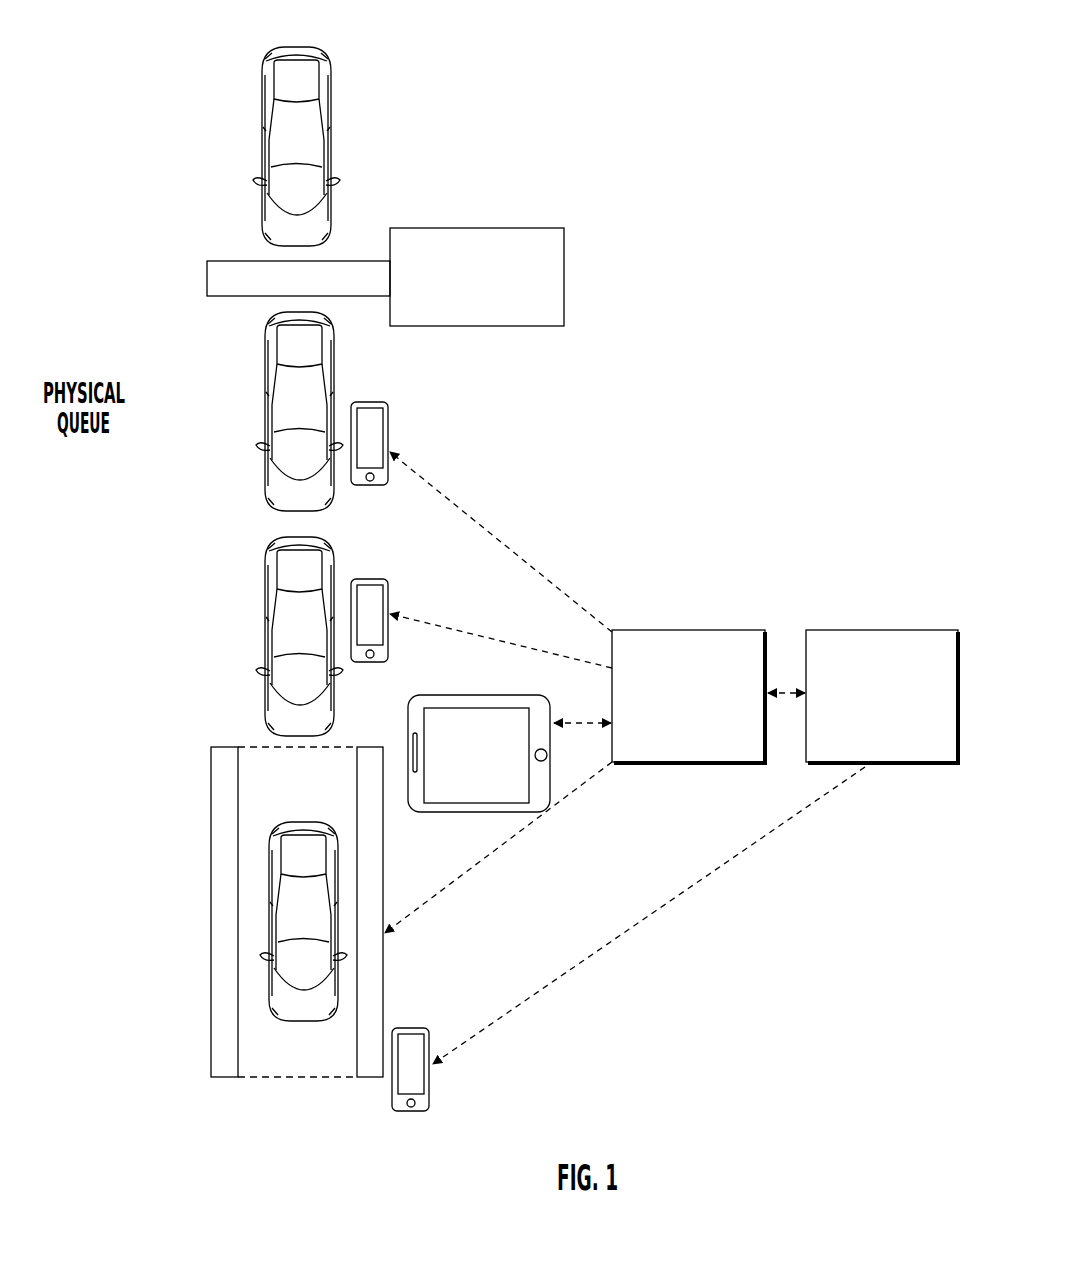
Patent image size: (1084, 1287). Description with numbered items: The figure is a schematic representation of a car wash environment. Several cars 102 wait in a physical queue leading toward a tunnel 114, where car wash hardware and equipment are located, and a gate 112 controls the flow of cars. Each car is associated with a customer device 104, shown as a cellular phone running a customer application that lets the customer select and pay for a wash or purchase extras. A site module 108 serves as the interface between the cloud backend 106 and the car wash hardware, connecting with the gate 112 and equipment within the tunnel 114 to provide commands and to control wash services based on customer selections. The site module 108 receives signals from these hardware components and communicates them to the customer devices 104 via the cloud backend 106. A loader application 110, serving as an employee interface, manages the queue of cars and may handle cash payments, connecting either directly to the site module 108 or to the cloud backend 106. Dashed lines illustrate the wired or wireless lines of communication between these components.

The car 102 is at (265, 473).
The customer device 104 is at (370, 402).
The cloud backend 106 is at (899, 753).
The site module 108 is at (706, 736).
The loader application 110 is at (468, 695).
The gate 112 is at (565, 319).
The tunnel 114 is at (211, 820).